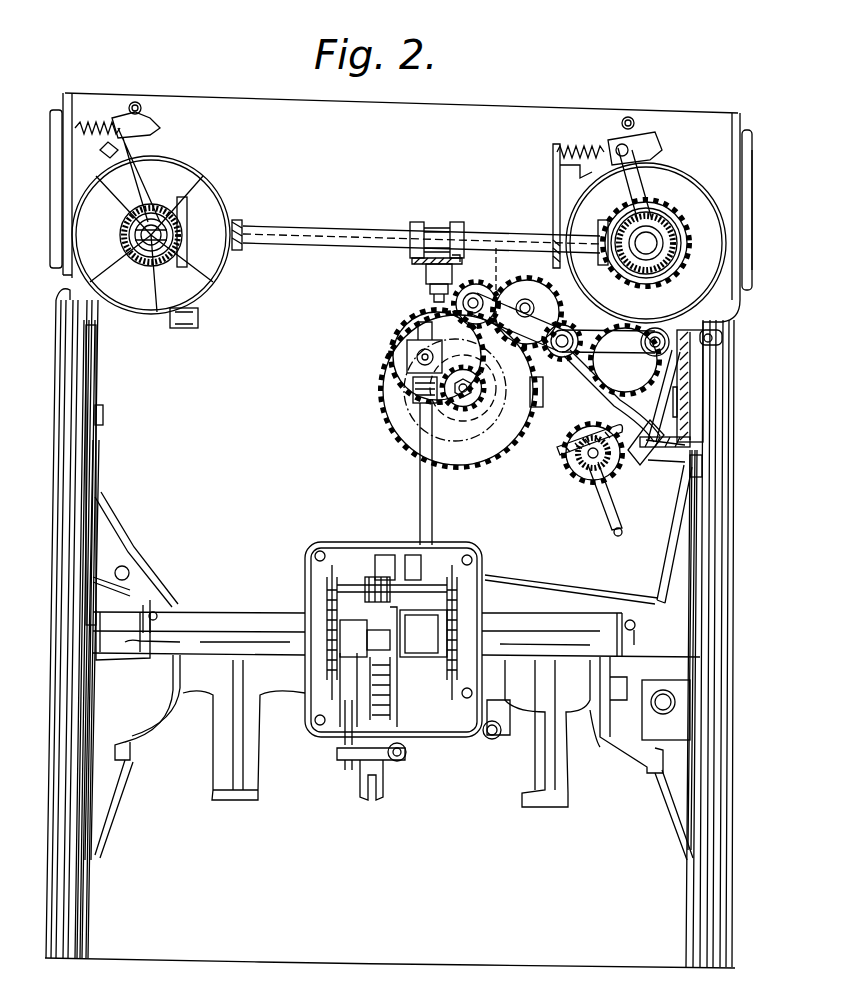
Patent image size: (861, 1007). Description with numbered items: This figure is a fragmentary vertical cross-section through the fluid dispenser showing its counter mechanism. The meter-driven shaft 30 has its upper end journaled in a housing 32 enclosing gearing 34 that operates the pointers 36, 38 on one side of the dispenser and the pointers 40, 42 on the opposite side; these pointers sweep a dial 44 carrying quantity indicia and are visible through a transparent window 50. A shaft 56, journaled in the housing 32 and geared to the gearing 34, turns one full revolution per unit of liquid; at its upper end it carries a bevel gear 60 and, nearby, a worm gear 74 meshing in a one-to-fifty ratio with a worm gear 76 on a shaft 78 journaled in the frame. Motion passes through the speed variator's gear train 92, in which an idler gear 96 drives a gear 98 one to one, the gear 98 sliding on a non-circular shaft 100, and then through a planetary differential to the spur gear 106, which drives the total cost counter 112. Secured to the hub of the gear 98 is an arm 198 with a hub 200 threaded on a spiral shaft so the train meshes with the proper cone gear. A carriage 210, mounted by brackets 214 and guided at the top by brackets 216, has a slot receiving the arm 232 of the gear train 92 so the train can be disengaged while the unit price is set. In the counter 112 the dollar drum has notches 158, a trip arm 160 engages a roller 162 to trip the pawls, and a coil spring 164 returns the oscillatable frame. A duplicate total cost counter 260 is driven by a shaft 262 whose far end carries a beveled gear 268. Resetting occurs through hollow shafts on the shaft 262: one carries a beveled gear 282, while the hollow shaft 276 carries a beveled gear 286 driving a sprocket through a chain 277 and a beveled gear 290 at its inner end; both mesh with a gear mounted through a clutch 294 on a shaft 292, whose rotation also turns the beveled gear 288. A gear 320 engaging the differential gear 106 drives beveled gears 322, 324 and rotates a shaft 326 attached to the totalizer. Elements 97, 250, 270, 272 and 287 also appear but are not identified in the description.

The shaft 30 is at (376, 800).
The housing 32 is at (330, 548).
The gearing 34 is at (352, 578).
The pointer 36 is at (86, 447).
The pointer 38 is at (90, 463).
The pointer 40 is at (704, 452).
The pointer 42 is at (706, 468).
The dial 44 is at (98, 388).
The transparent window 50 is at (732, 322).
The shaft 56 is at (422, 470).
The bevel gear 60 is at (407, 332).
The worm gear 74 is at (403, 400).
The worm gear 76 is at (703, 382).
The shaft 78 is at (58, 312).
The gear train 92 is at (512, 300).
The idler gear 96 is at (521, 298).
The pinion 97 is at (470, 292).
The gear 98 is at (605, 396).
The non-circular shaft 100 is at (567, 333).
The spur gear 106 is at (525, 468).
The total cost counter 112 is at (701, 176).
The notches 158 is at (463, 598).
The trip arm 160 is at (600, 134).
The roller 162 is at (635, 121).
The coil spring 164 is at (570, 146).
The arm 198 is at (615, 385).
The hub 200 is at (648, 355).
The carriage 210 is at (680, 458).
The bracket 214 is at (685, 466).
The bracket 216 is at (712, 343).
The arm 232 is at (612, 388).
The connecting pin 250 is at (656, 448).
The duplicate total cost counter 260 is at (207, 170).
The shaft 262 is at (428, 228).
The beveled gear 268 is at (66, 285).
The supply reel 270 is at (213, 289).
The reel hub 272 is at (167, 197).
The hollow shaft 276 is at (297, 226).
The chain 277 is at (478, 240).
The beveled gear 282 is at (452, 224).
The beveled gear 286 is at (188, 208).
The clamp 287 is at (420, 262).
The beveled gear 288 is at (157, 270).
The beveled gear 290 is at (417, 250).
The shaft 292 is at (432, 296).
The clutch 294 is at (458, 258).
The gear 320 is at (583, 485).
The beveled gear 322 is at (565, 456).
The beveled gear 324 is at (578, 464).
The shaft 326 is at (622, 534).